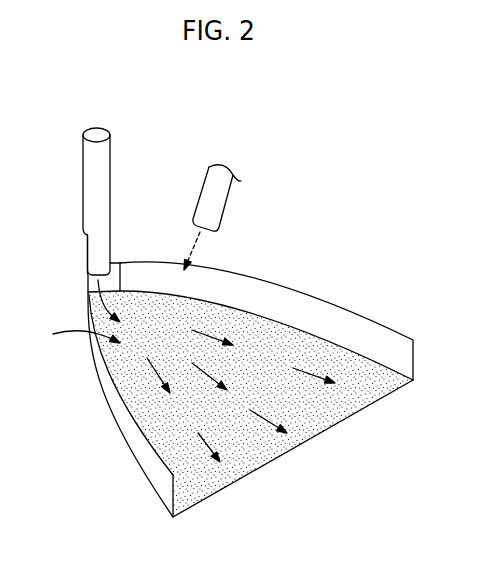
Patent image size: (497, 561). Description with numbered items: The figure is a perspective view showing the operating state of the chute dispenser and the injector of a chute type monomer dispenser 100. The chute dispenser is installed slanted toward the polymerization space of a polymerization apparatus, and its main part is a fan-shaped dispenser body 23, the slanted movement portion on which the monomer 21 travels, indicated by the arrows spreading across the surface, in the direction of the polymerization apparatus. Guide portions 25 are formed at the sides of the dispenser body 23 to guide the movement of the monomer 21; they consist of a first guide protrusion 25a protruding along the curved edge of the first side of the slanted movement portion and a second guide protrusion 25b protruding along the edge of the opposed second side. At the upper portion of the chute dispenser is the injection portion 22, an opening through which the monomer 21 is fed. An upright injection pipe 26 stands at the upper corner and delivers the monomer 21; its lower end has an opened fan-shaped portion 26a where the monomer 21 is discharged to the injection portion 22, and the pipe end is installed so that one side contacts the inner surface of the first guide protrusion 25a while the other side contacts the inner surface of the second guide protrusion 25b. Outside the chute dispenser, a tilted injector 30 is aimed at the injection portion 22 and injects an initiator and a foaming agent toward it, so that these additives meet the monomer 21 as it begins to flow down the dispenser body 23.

The chute type monomer dispenser 100 is at (294, 178).
The monomer 21 is at (305, 372).
The injection portion 22 is at (75, 337).
The dispenser body 23 is at (250, 448).
The guide portions 25 is at (405, 522).
The first guide protrusion 25a is at (110, 393).
The second guide protrusion 25b is at (283, 285).
The injection pipe 26 is at (88, 170).
The opened fan-shaped portion 26a is at (88, 246).
The injector 30 is at (203, 195).